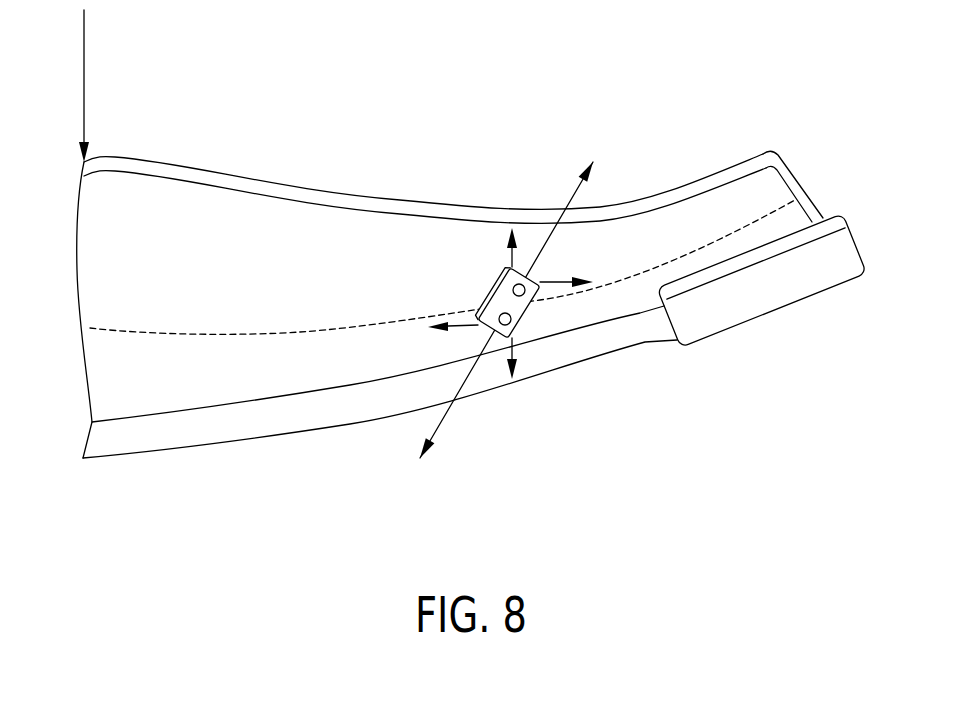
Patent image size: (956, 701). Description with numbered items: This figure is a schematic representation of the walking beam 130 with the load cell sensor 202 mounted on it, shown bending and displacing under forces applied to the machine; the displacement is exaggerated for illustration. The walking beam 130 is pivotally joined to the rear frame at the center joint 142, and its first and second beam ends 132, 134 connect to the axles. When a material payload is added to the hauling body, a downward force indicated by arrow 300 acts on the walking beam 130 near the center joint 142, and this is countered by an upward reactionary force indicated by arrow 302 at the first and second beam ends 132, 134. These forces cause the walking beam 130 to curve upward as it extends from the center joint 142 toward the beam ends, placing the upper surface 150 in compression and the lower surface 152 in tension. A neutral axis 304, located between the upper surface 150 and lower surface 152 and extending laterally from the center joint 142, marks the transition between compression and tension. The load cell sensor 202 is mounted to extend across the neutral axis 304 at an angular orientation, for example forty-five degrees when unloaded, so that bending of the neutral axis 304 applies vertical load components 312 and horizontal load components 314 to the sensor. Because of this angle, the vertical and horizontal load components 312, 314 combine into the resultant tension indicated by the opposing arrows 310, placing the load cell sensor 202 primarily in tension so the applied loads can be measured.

The arrow 300 is at (85, 38).
The center joint 142 is at (96, 158).
The walking beam 130 is at (227, 250).
The upper surface 150 is at (316, 188).
The lower surface 152 is at (265, 438).
The load cell sensor 202 is at (497, 280).
The opposing arrows 310 is at (558, 281).
The vertical load components 312 is at (512, 343).
The horizontal load components 314 is at (560, 281).
The neutral axis 304 is at (717, 235).
The first beam end 132 is at (772, 150).
The second beam end 134 is at (789, 194).
The arrow 302 is at (759, 300).